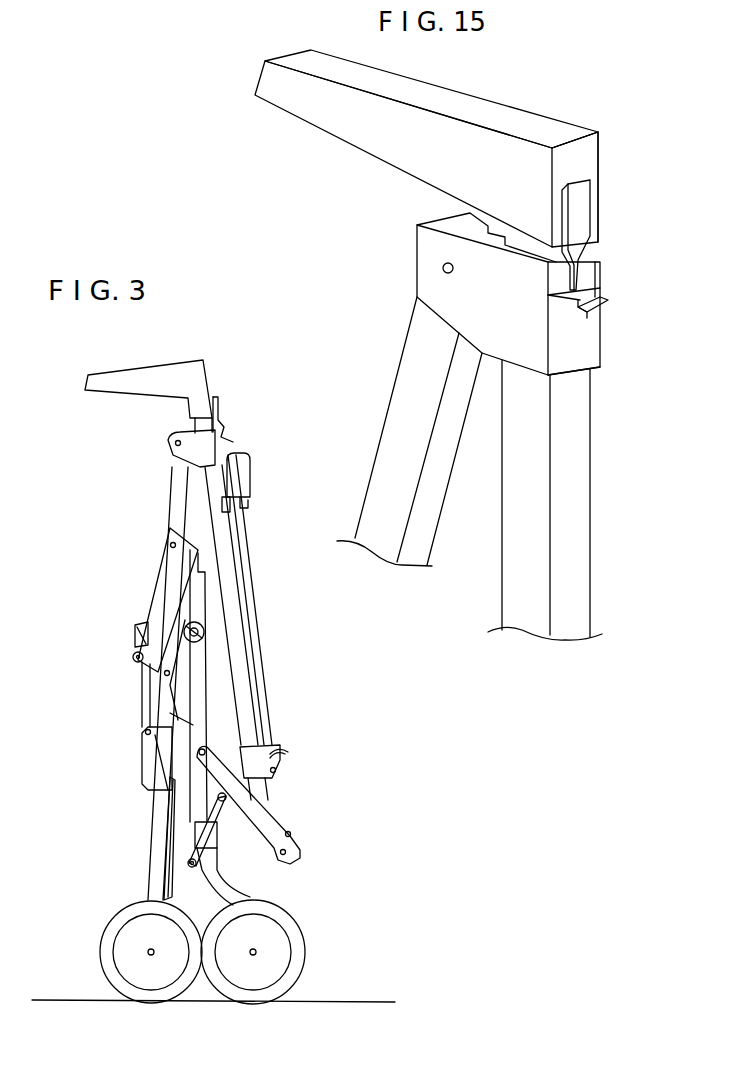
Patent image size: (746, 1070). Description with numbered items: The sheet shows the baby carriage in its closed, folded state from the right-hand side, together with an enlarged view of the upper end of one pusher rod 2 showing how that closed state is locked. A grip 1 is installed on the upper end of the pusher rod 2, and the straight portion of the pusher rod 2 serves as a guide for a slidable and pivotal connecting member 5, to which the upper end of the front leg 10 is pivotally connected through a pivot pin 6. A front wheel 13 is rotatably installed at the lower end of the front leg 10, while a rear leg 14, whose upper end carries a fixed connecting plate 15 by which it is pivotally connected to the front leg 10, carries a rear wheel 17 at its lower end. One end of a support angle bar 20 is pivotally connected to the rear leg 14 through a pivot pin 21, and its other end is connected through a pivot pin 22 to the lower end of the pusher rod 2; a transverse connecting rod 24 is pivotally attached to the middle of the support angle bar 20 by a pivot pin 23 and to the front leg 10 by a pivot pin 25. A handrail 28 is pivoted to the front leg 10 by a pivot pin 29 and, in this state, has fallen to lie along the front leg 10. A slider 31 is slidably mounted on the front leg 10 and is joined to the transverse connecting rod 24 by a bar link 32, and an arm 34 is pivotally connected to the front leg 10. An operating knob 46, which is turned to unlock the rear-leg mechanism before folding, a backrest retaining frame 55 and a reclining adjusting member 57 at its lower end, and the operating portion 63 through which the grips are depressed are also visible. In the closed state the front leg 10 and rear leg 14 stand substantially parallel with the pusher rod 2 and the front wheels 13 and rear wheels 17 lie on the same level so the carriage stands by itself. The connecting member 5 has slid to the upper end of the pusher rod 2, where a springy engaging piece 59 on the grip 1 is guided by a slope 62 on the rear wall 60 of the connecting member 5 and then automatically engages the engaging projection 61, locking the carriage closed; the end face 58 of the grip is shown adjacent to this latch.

In FIG. 15, the grip 1 is at (503, 104).
In FIG. 3, the grip 1 is at (172, 368).
In FIG. 15, the pusher rod 2 is at (583, 497).
In FIG. 3, the pusher rod 2 is at (236, 585).
In FIG. 15, the slidable and pivotal connecting member 5 is at (416, 244).
In FIG. 3, the slidable and pivotal connecting member 5 is at (192, 433).
In FIG. 15, the pivot pin 6 is at (447, 273).
In FIG. 3, the pivot pin 6 is at (174, 444).
In FIG. 3, the front leg 10 is at (152, 825).
In FIG. 3, the front wheel 13 is at (101, 952).
In FIG. 3, the rear leg 14 is at (218, 888).
In FIG. 3, the connecting plate 15 is at (190, 598).
In FIG. 3, the rear wheel 17 is at (306, 952).
In FIG. 3, the support angle bar 20 is at (275, 810).
In FIG. 3, the pivot pin 21 is at (158, 767).
In FIG. 3, the pivot pin 22 is at (303, 850).
In FIG. 3, the pivot pin 23 is at (221, 802).
In FIG. 3, the transverse connecting rod 24 is at (135, 632).
In FIG. 3, the pivot pin 25 is at (166, 676).
In FIG. 3, the handrail 28 is at (168, 577).
In FIG. 3, the pivot pin 29 is at (171, 545).
In FIG. 3, the slider 31 is at (150, 748).
In FIG. 3, the bar link 32 is at (135, 661).
In FIG. 3, the arm 34 is at (165, 870).
In FIG. 3, the operating knob 46 is at (205, 633).
In FIG. 3, the backrest retaining frame 55 is at (247, 548).
In FIG. 3, the reclining adjusting member 57 is at (286, 750).
In FIG. 15, the handle end face 58 is at (599, 150).
In FIG. 15, the engaging piece 59 is at (597, 275).
In FIG. 15, the rear wall 60 is at (590, 345).
In FIG. 15, the engaging projection 61 is at (582, 298).
In FIG. 15, the slope 62 is at (578, 250).
In FIG. 3, the slope 62 is at (223, 419).
In FIG. 3, the operating portion 63 is at (250, 497).